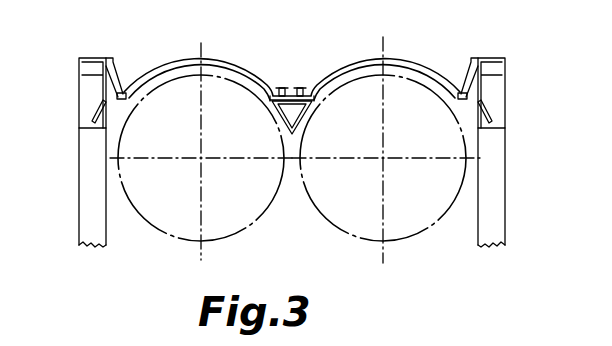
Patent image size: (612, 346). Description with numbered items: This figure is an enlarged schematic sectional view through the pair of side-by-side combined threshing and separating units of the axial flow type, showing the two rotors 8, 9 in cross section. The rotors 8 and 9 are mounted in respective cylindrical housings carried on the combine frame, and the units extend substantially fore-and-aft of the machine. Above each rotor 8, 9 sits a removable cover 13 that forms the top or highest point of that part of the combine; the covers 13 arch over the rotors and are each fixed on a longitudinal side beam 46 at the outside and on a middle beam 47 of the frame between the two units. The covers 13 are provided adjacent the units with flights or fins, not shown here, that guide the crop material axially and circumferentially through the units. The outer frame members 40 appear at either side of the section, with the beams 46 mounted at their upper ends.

The rotor 8 is at (161, 231).
The rotor 9 is at (418, 233).
The removable cover 13 is at (238, 67).
The support post 40 is at (66, 196).
The longitudinal side beam 46 is at (79, 82).
The middle beam 47 is at (292, 136).